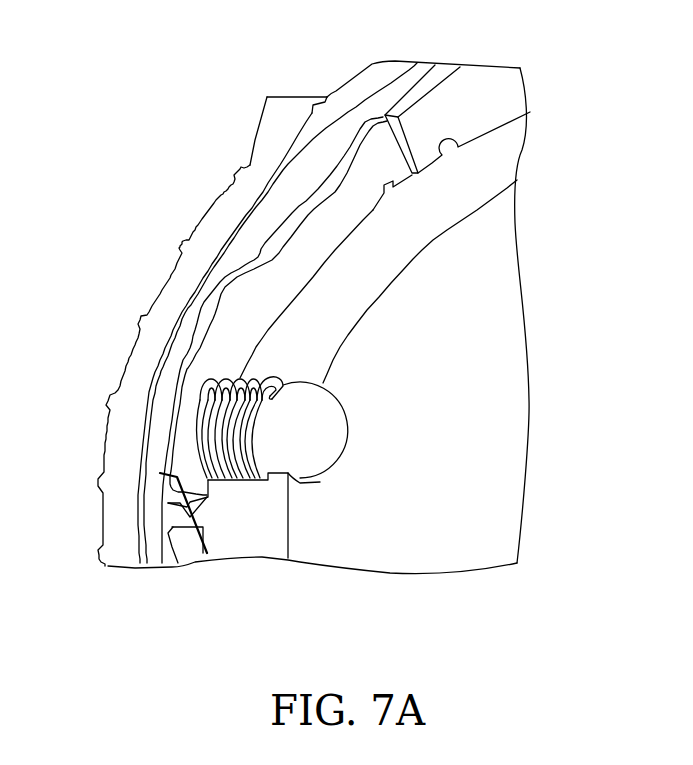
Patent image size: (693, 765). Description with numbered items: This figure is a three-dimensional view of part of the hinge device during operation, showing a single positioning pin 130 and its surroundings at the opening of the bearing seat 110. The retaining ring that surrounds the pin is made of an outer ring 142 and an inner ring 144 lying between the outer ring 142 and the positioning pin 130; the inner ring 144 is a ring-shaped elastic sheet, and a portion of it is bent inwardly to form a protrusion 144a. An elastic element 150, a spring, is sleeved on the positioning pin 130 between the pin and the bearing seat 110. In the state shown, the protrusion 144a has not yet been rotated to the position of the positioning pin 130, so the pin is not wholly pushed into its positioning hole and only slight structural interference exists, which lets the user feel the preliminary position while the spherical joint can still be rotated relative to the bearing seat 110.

The bearing seat 110 is at (405, 227).
The positioning pin 130 is at (320, 442).
The outer ring 142 is at (283, 152).
The inner ring 144 is at (181, 342).
The protrusion 144a is at (283, 233).
The elastic element 150 is at (238, 378).